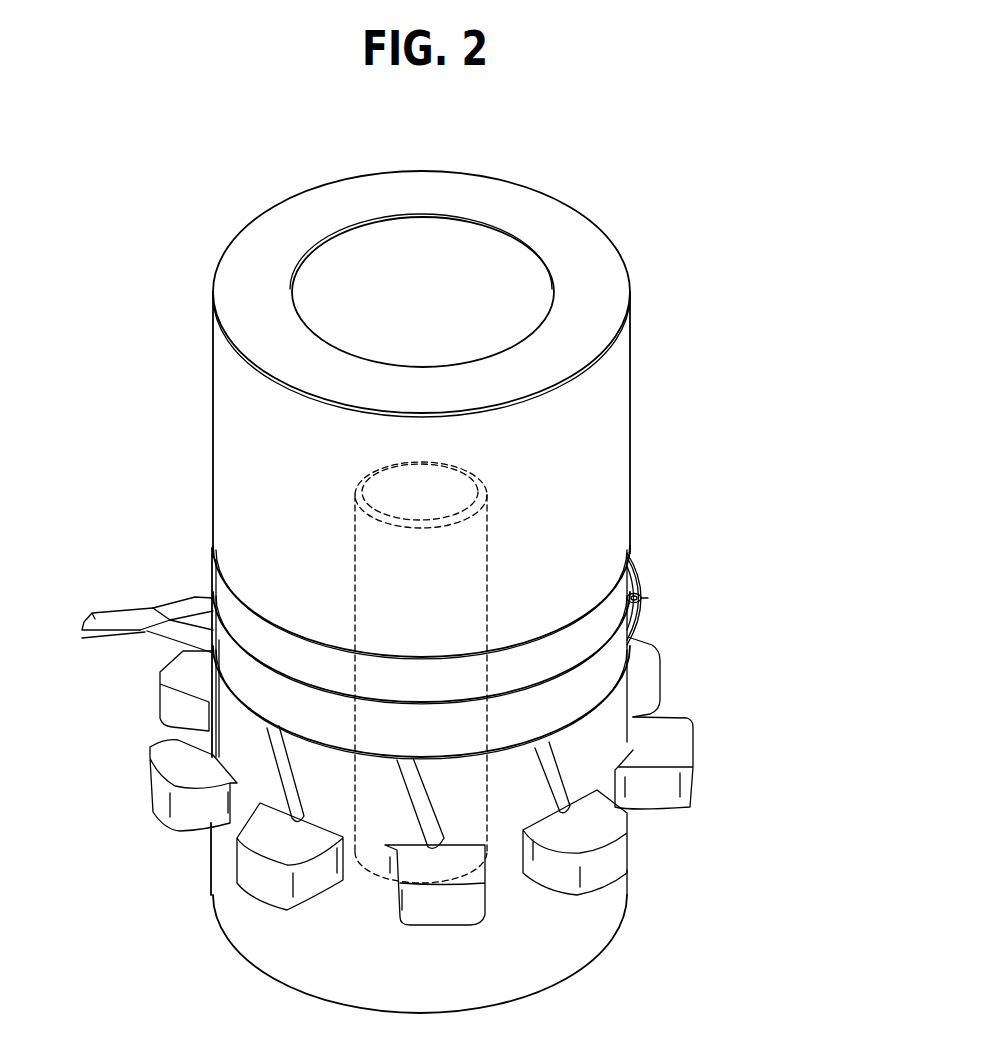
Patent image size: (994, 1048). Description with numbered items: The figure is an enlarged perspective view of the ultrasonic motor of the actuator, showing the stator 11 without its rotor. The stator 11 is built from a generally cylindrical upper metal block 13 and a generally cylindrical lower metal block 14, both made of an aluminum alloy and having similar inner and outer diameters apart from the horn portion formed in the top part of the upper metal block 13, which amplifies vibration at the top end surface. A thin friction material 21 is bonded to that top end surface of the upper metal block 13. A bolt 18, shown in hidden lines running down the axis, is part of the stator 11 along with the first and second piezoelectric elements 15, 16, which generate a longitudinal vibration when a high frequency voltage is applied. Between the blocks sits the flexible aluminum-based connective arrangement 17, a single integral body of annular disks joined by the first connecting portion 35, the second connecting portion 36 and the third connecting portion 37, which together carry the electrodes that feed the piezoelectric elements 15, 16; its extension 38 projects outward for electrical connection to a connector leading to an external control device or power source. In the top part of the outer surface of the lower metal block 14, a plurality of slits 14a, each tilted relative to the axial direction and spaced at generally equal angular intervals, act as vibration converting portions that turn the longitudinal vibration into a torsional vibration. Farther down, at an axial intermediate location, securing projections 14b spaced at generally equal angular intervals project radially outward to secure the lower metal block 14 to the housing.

The stator 11 is at (676, 391).
The upper metal block 13 is at (620, 468).
The thin friction material 21 is at (614, 255).
The bolt 18 is at (490, 540).
The first piezoelectric element 15 is at (595, 618).
The second piezoelectric element 16 is at (587, 697).
The flexible aluminum-based connective arrangement 17 is at (650, 548).
The third connecting portion 37 is at (652, 575).
The first connecting portion 35 is at (643, 602).
The second connecting portion 36 is at (179, 624).
The extension 38 is at (109, 628).
The lower metal block 14 is at (627, 890).
The slits 14a is at (286, 795).
The securing projections 14b is at (157, 800).